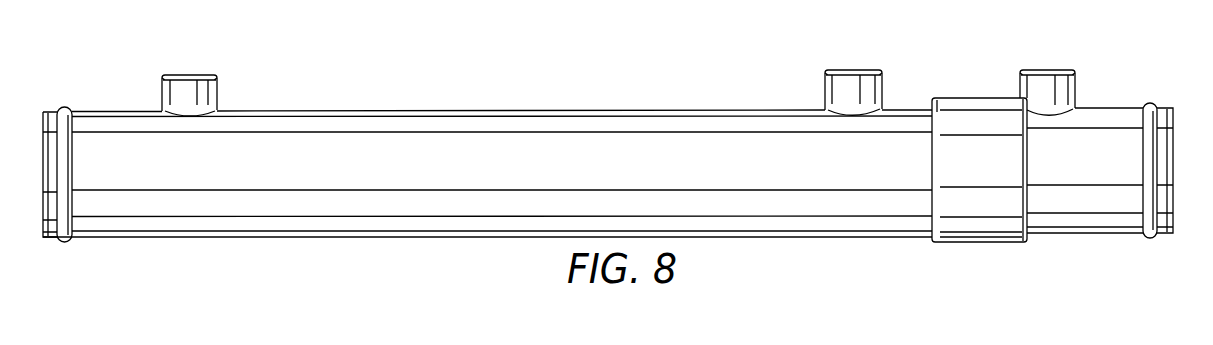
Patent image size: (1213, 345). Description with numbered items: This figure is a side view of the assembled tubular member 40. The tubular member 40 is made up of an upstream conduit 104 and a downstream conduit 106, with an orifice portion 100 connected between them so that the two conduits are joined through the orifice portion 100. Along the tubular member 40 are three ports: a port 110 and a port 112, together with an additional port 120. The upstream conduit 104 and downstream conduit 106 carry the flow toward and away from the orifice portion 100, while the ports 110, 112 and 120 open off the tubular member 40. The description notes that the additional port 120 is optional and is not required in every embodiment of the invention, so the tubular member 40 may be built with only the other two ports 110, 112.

The tubular member 40 is at (676, 86).
The orifice portion 100 is at (982, 243).
The upstream conduit 104 is at (426, 110).
The downstream conduit 106 is at (1123, 115).
The port 110 is at (873, 88).
The port 112 is at (1070, 90).
The additional port 120 is at (213, 90).